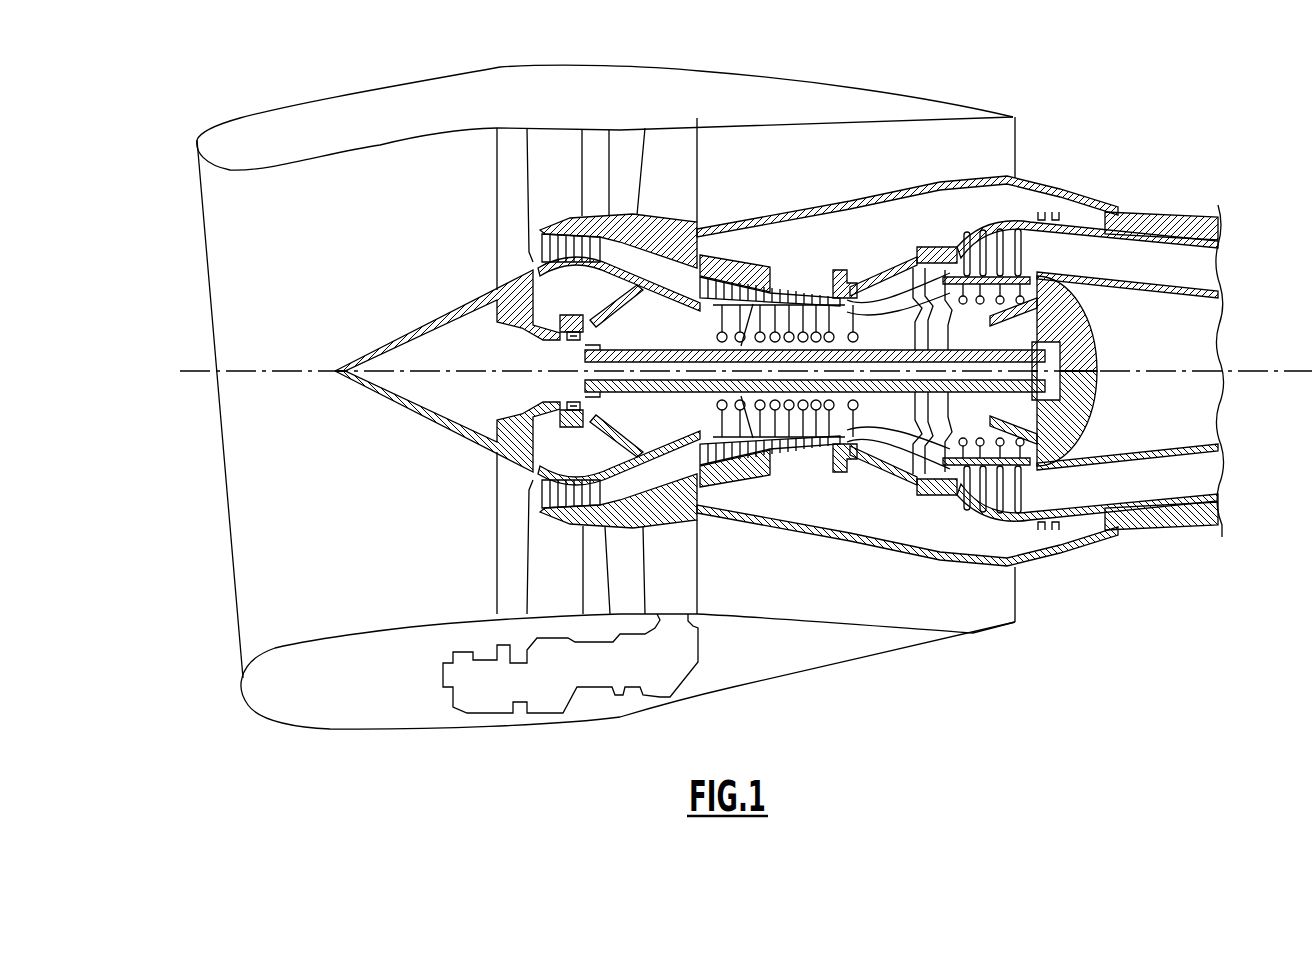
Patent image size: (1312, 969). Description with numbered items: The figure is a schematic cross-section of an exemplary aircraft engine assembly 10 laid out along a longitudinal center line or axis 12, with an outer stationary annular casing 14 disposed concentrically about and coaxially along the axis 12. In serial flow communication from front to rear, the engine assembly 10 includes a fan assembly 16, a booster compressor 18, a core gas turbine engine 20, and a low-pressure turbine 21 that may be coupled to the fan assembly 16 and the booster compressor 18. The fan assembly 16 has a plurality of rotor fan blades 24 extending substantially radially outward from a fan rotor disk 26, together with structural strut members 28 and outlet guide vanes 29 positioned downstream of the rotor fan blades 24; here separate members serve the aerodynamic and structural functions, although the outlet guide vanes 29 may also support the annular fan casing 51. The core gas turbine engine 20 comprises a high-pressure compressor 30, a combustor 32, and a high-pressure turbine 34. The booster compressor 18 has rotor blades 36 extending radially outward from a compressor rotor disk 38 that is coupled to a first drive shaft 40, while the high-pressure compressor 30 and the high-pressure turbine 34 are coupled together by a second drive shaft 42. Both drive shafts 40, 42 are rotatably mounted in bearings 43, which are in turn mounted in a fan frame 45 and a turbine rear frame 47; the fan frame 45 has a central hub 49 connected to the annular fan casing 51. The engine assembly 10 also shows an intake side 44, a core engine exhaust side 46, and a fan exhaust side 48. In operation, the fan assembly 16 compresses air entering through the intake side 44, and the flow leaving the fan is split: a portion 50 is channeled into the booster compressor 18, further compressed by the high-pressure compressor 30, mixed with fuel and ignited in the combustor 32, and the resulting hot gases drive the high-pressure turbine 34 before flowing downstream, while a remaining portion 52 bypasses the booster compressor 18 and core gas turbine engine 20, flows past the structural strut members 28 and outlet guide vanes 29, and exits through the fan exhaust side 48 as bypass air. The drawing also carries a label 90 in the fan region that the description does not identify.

The aircraft engine assembly 10 is at (710, 374).
The longitudinal center line or axis 12 is at (268, 369).
The outer stationary annular casing 14 is at (747, 268).
The fan assembly 16 is at (469, 227).
The booster compressor 18 is at (556, 522).
The core gas turbine engine 20 is at (857, 282).
The low-pressure turbine 21 is at (998, 526).
The rotor fan blades 24 is at (498, 523).
The fan rotor disk 26 is at (493, 423).
The structural strut members 28 is at (592, 143).
The outlet guide vanes 29 is at (678, 166).
The high-pressure compressor 30 is at (761, 459).
The combustor 32 is at (885, 463).
The high-pressure turbine 34 is at (946, 488).
The rotor blades 36 is at (590, 487).
The compressor rotor disk 38 is at (538, 274).
The first drive shaft 40 is at (867, 356).
The second drive shaft 42 is at (915, 248).
The bearings 43 is at (1028, 337).
The intake side 44 is at (204, 275).
The fan frame 45 is at (492, 66).
The core engine exhaust side 46 is at (1207, 267).
The turbine rear frame 47 is at (1200, 215).
The fan exhaust side 48 is at (1042, 142).
The central hub 49 is at (662, 688).
The portion of the airflow 50 is at (555, 498).
The annular fan casing 51 is at (775, 87).
The remaining portion of the airflow 52 is at (550, 187).
The fan case 90 is at (622, 517).